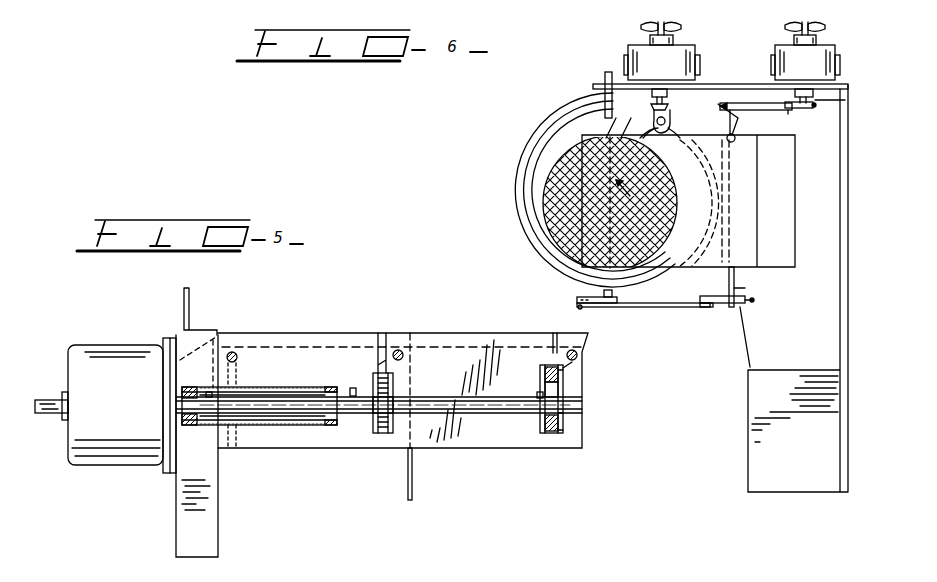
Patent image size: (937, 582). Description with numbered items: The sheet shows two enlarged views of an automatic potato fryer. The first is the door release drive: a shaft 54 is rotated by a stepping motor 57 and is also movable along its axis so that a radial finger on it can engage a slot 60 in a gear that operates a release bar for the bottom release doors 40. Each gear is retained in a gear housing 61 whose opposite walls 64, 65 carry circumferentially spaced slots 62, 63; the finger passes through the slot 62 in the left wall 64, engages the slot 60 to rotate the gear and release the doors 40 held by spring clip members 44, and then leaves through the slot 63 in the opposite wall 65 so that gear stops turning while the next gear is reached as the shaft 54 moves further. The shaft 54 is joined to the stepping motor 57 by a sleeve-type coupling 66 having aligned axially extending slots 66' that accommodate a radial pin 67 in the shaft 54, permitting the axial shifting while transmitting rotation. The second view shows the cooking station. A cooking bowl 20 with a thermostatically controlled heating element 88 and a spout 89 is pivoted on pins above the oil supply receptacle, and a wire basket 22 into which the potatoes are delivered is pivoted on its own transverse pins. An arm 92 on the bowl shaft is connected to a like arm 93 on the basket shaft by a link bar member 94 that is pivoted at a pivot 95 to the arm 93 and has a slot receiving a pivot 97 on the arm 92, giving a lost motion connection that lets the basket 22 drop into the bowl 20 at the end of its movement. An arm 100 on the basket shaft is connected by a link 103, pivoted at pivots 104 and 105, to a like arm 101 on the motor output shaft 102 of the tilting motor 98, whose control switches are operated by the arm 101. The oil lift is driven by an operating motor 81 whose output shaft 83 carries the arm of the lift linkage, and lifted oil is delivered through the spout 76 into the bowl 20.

In FIG. 6, the cooking bowl 20 is at (540, 238).
In FIG. 6, the wire basket 22 is at (718, 287).
In FIG. 5, the bottom release door 40 is at (288, 346).
In FIG. 5, the spring clip member 44 is at (408, 482).
In FIG. 5, the shaft 54 is at (435, 397).
In FIG. 5, the stepping motor 57 is at (110, 458).
In FIG. 5, the slot 60 is at (558, 396).
In FIG. 5, the gear housing 61 is at (373, 426).
In FIG. 5, the slot 62 is at (548, 370).
In FIG. 5, the slot 63 is at (563, 420).
In FIG. 5, the wall 64 is at (545, 424).
In FIG. 5, the wall 65 is at (560, 376).
In FIG. 5, the sleeve-type coupling 66 is at (263, 438).
In FIG. 5, the axially extending slots 66' is at (262, 438).
In FIG. 5, the radial pin 67 is at (209, 398).
In FIG. 6, the spout 76 is at (672, 124).
In FIG. 6, the operating motor 81 is at (680, 58).
In FIG. 6, the output shaft 83 is at (652, 105).
In FIG. 6, the heating element 88 is at (610, 203).
In FIG. 6, the spout 89 is at (690, 198).
In FIG. 6, the arm 92 is at (583, 298).
In FIG. 6, the arm 93 is at (722, 304).
In FIG. 6, the link bar member 94 is at (652, 308).
In FIG. 6, the pivot 95 is at (705, 307).
In FIG. 6, the pivot 97 is at (578, 304).
In FIG. 6, the motor 98 is at (818, 54).
In FIG. 6, the arm 100 is at (726, 104).
In FIG. 6, the arm 101 is at (810, 109).
In FIG. 6, the motor output shaft 102 is at (815, 101).
In FIG. 6, the link 103 is at (793, 104).
In FIG. 6, the pivot 104 is at (780, 111).
In FIG. 6, the pivot 105 is at (789, 112).